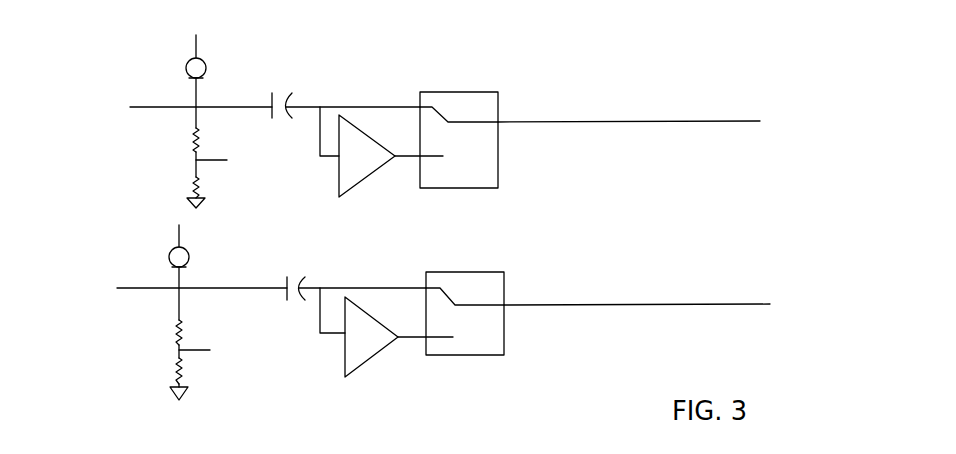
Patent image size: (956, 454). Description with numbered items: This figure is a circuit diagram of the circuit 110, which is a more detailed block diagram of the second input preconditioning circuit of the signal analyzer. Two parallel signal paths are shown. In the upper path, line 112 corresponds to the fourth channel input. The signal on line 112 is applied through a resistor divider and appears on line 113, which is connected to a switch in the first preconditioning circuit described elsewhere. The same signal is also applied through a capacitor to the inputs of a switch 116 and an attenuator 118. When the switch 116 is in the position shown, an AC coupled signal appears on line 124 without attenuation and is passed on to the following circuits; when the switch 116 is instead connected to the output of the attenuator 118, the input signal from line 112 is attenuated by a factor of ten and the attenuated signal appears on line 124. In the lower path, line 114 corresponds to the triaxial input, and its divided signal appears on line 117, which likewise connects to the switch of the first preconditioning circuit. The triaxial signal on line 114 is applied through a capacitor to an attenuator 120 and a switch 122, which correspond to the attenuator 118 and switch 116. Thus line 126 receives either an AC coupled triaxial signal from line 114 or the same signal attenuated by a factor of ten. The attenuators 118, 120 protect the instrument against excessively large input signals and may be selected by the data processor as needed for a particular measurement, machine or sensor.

The circuit 110 is at (349, 57).
The line 112 is at (158, 107).
The line 113 is at (210, 158).
The line 114 is at (142, 288).
The switch 116 is at (442, 92).
The line 117 is at (193, 348).
The attenuator 118 is at (355, 185).
The attenuator 120 is at (357, 370).
The switch 122 is at (468, 355).
The line 124 is at (627, 121).
The line 126 is at (615, 305).